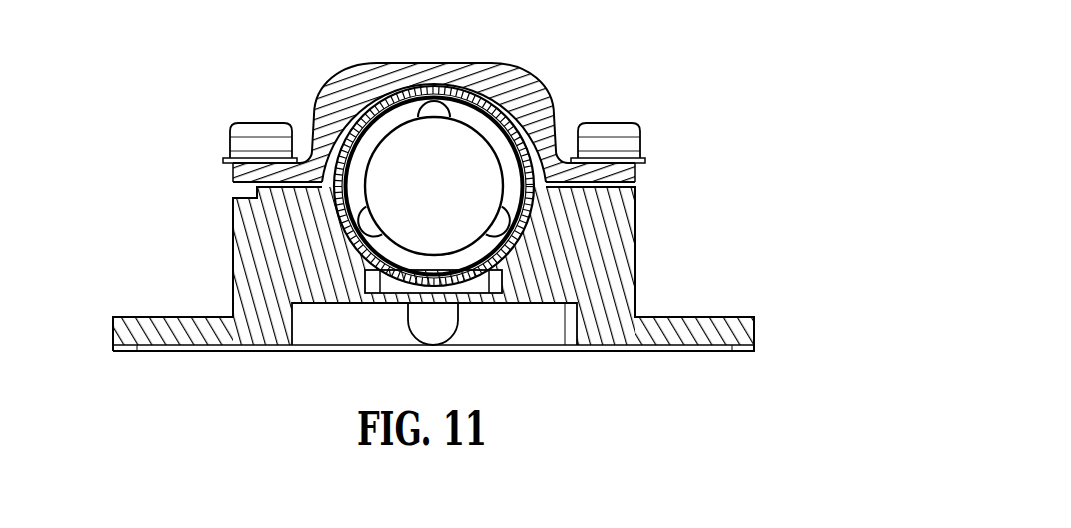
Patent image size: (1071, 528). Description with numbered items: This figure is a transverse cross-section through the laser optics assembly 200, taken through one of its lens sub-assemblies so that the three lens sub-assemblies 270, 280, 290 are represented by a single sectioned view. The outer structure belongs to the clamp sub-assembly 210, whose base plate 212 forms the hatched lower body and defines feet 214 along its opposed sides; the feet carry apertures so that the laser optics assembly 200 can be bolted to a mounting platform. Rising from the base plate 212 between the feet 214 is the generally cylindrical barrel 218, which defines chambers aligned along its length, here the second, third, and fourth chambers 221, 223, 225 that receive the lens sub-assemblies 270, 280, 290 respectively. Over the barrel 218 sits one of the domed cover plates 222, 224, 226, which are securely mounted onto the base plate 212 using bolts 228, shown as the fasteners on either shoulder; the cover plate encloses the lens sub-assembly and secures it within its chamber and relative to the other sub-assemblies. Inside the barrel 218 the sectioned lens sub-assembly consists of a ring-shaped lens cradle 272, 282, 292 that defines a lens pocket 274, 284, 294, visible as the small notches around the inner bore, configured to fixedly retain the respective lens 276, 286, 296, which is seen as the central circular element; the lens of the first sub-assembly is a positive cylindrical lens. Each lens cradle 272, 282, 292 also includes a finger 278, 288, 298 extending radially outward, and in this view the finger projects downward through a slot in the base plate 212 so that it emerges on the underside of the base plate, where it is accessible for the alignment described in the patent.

The laser optics assembly 200 is at (443, 217).
The clamp sub-assembly 210 is at (449, 294).
The base plate 212 is at (627, 212).
The feet 214 is at (156, 333).
The barrel 218 is at (512, 257).
The second chamber 221 is at (434, 104).
The third chamber 223 is at (434, 104).
The fourth chamber 225 is at (348, 120).
The cover plate 222 is at (455, 93).
The cover plate 224 is at (455, 93).
The cover plate 226 is at (455, 93).
The bolts 228 is at (240, 128).
The lens sub-assembly 270 is at (391, 239).
The lens sub-assembly 280 is at (391, 239).
The lens sub-assembly 290 is at (362, 262).
The lens cradle 272 is at (311, 186).
The lens cradle 282 is at (311, 186).
The lens cradle 292 is at (350, 182).
The lens pocket 274 is at (437, 124).
The lens pocket 284 is at (437, 124).
The lens pocket 294 is at (432, 106).
The lens 276 is at (532, 158).
The lens 286 is at (532, 158).
The lens 296 is at (476, 183).
The finger 278 is at (471, 349).
The finger 288 is at (471, 349).
The finger 298 is at (437, 335).